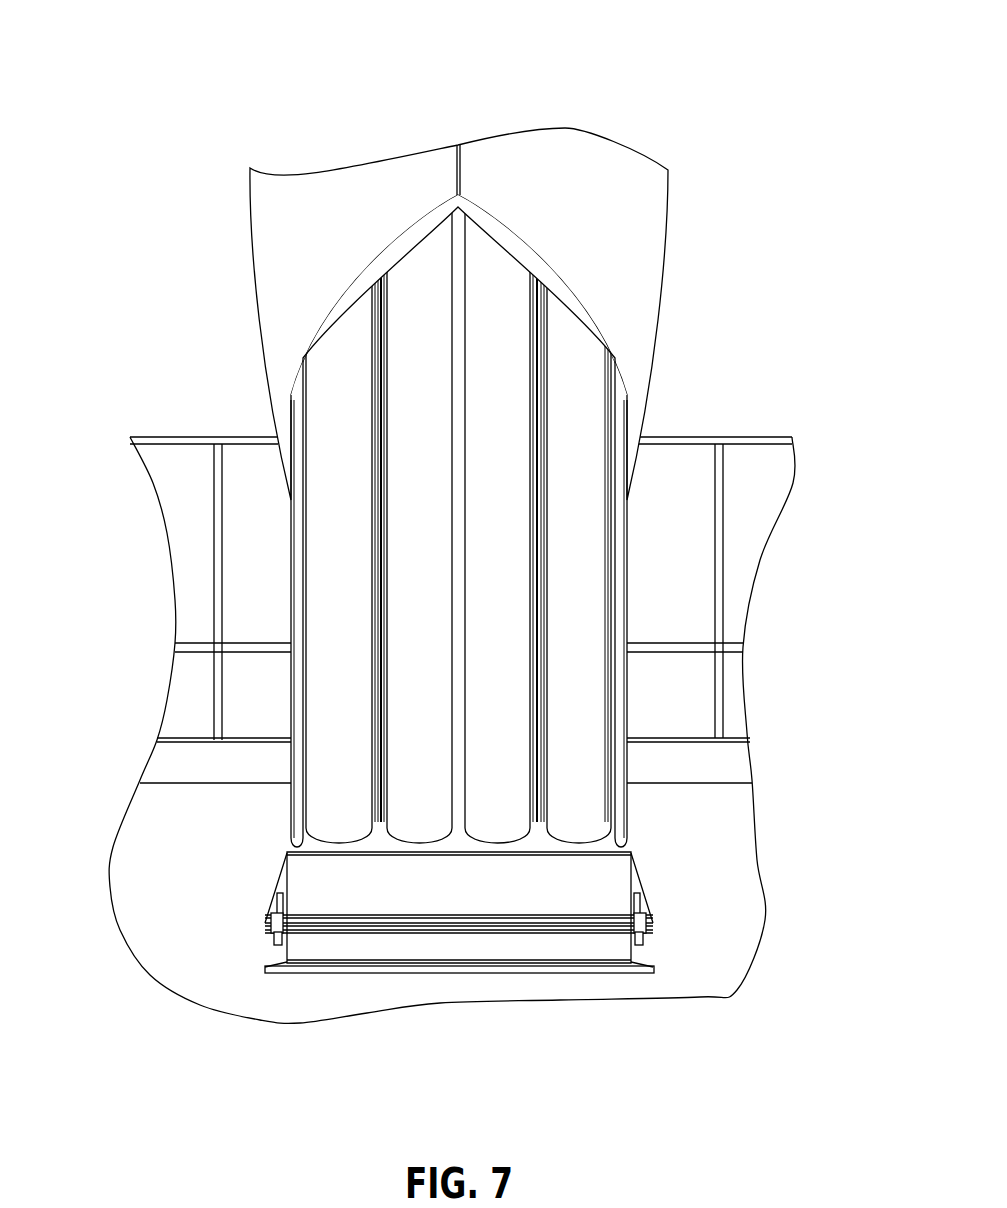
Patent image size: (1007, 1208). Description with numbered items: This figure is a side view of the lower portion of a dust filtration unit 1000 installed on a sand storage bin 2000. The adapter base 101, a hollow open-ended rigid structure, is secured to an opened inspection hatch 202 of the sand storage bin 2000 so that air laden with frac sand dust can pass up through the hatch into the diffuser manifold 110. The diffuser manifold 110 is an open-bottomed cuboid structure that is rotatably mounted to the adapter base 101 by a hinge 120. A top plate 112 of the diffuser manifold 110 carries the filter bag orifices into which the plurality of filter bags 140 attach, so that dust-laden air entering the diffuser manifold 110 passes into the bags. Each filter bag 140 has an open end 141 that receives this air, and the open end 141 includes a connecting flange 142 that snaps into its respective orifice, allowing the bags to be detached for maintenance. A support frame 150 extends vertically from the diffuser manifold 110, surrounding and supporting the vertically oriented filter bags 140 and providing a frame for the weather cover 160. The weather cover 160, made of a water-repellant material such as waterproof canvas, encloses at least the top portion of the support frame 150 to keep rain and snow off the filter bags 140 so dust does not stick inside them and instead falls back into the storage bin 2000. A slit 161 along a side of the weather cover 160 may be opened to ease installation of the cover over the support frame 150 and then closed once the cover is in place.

The dust filtration unit 1000 is at (563, 95).
The sand storage bin 2000 is at (174, 916).
The inspection hatch 202 is at (250, 889).
The weather cover 160 is at (343, 247).
The slit 161 is at (573, 300).
The support frame 150 is at (626, 522).
The filter bags 140 is at (572, 640).
The open end 141 is at (578, 795).
The connecting flange 142 is at (583, 838).
The top plate 112 is at (628, 842).
The diffuser manifold 110 is at (617, 887).
The adapter base 101 is at (623, 950).
The hinge 120 is at (266, 937).